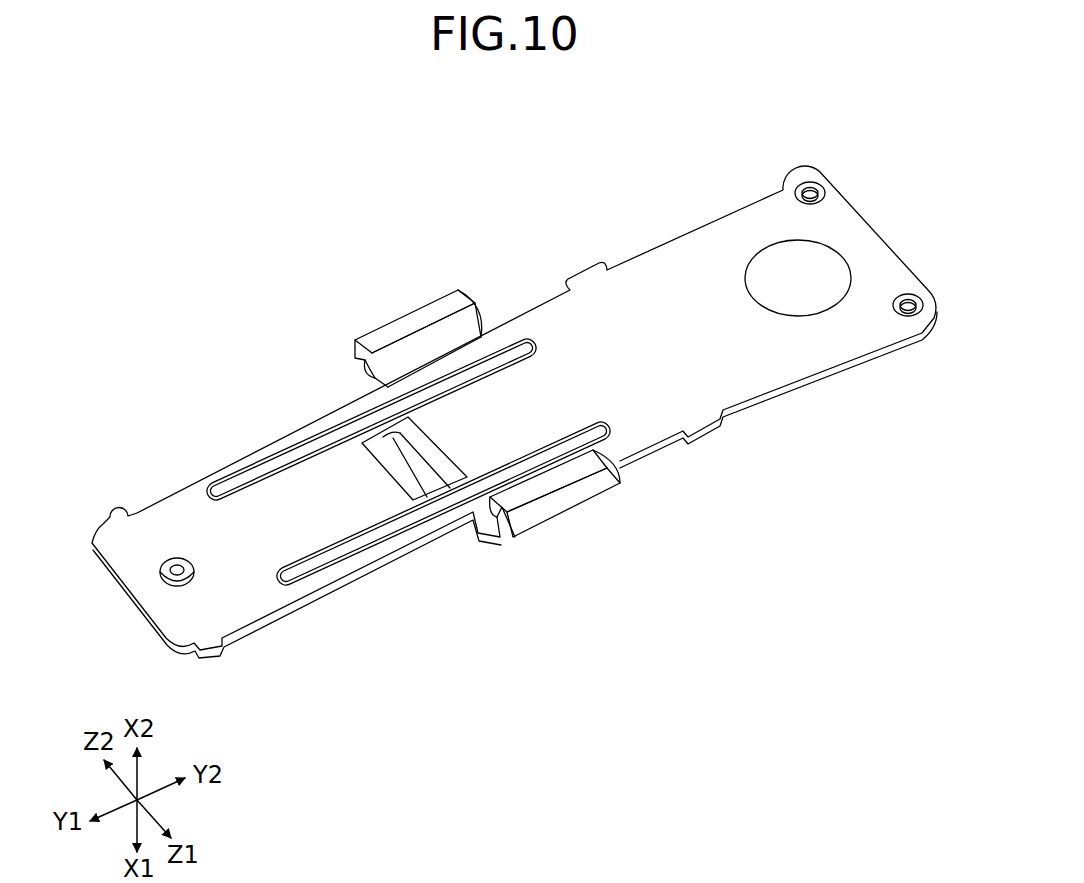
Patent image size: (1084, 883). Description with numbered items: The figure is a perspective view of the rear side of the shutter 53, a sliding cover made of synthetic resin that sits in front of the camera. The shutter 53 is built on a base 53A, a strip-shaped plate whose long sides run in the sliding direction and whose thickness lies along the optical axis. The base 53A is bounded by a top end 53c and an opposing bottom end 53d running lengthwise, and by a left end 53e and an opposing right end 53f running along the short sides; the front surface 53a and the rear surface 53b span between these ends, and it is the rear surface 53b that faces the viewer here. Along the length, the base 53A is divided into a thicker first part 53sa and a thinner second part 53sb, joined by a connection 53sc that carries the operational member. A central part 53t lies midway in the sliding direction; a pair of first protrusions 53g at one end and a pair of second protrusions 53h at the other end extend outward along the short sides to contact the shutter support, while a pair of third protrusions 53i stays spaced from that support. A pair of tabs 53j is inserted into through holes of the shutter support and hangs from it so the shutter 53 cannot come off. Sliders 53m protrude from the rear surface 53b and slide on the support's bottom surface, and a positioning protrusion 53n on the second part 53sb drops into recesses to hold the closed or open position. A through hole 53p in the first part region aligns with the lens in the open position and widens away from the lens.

The shutter 53 is at (672, 262).
The base 53A is at (630, 260).
The rear surface 53b is at (630, 260).
The first part 53sa is at (630, 260).
The through hole 53p is at (798, 298).
The sliders 53m is at (812, 188).
The bottom end 53d is at (215, 472).
The second part 53sb is at (320, 590).
The tabs 53j is at (410, 312).
The central part 53t is at (623, 360).
The positioning protrusion 53n is at (175, 555).
The third protrusions 53i is at (582, 276).
The first protrusions 53g is at (800, 168).
The right end 53f is at (875, 228).
The front surface 53a is at (868, 355).
The top end 53c is at (753, 405).
The second protrusions 53h is at (113, 515).
The left end 53e is at (128, 598).
The connection 53sc is at (478, 530).